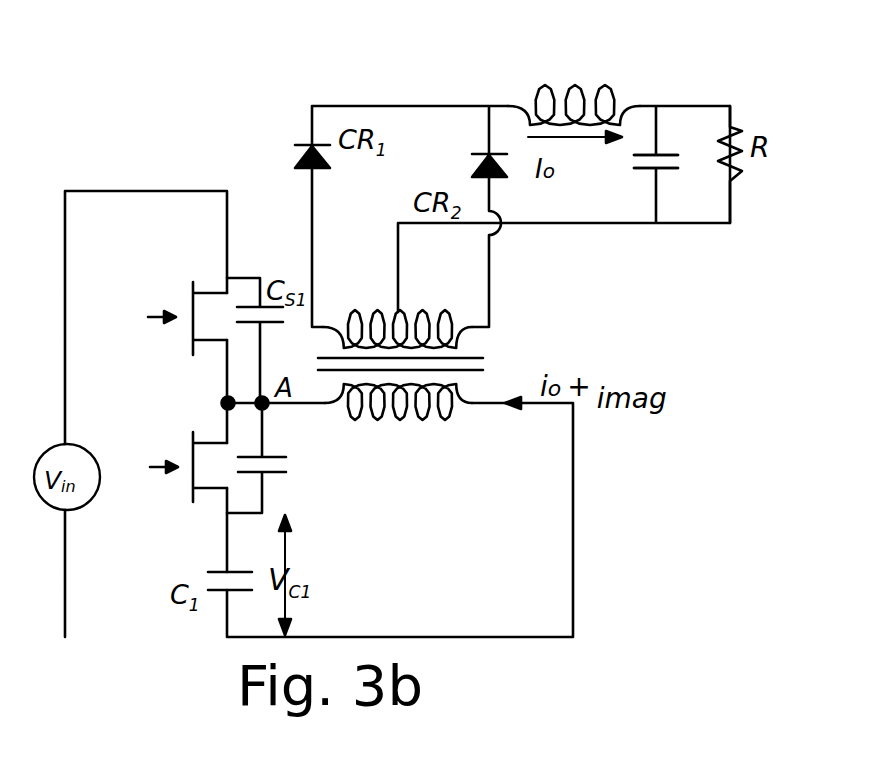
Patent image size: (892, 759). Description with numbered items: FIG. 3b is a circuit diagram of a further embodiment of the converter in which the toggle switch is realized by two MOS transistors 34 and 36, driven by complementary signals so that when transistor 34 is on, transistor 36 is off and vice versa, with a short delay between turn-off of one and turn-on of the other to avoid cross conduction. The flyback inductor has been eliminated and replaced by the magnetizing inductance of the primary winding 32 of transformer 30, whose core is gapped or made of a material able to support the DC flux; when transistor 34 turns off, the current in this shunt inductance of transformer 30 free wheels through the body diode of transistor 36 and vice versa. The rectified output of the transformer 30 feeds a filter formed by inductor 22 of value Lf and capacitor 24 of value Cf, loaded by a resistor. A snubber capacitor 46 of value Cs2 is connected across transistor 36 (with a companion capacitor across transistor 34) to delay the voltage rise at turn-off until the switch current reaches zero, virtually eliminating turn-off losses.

The inductor 22 is at (603, 91).
The capacitor 24 is at (662, 153).
The transformer 30 is at (420, 338).
The primary winding 32 is at (452, 412).
The MOS transistor 34 is at (172, 321).
The MOS transistor 36 is at (182, 458).
The capacitor 46 is at (266, 460).